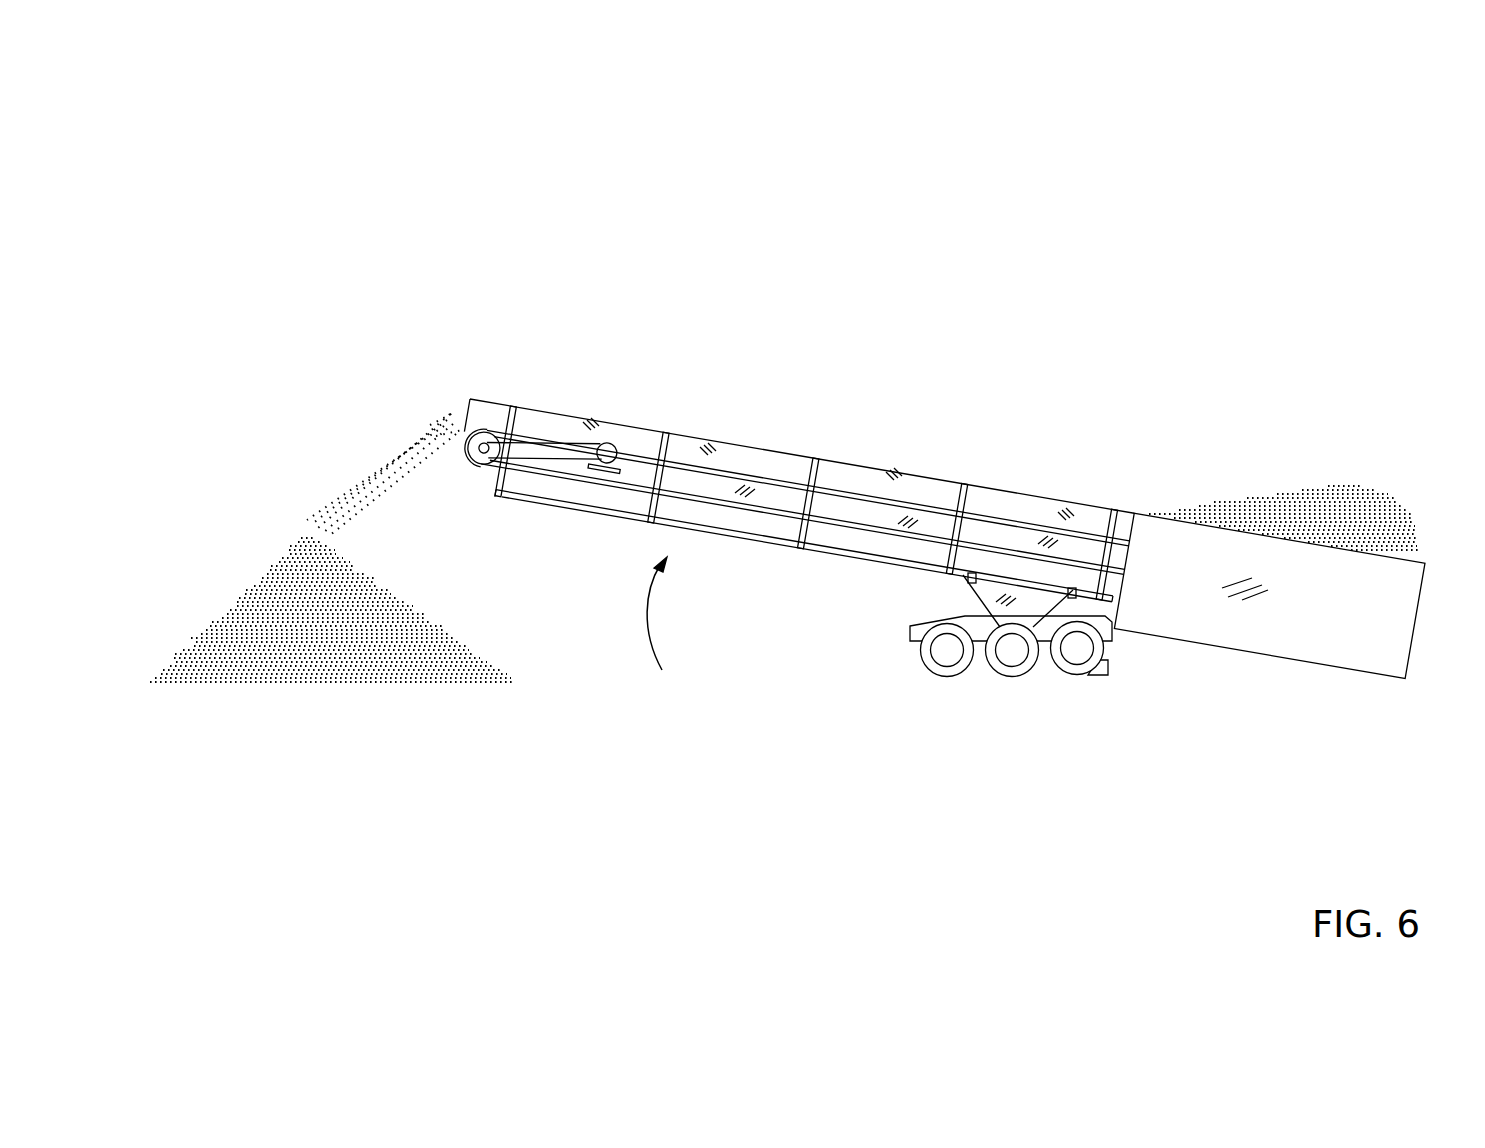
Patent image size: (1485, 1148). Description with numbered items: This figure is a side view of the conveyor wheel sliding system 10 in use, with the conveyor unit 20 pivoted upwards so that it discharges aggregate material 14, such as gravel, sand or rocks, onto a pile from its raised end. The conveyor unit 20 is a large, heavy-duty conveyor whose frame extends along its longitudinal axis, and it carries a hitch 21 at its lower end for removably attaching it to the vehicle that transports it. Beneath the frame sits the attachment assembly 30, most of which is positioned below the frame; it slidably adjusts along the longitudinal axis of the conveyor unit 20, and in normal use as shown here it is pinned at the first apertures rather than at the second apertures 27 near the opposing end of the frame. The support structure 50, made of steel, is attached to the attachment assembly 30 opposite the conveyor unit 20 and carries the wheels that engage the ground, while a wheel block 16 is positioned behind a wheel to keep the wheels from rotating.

The conveyor wheel sliding system 10 is at (290, 123).
The aggregate material 14 is at (268, 575).
The wheel block 16 is at (1108, 668).
The conveyor unit 20 is at (850, 450).
The hitch 21 is at (1310, 665).
The second apertures 27 is at (512, 498).
The attachment assembly 30 is at (958, 599).
The support structure 50 is at (888, 651).